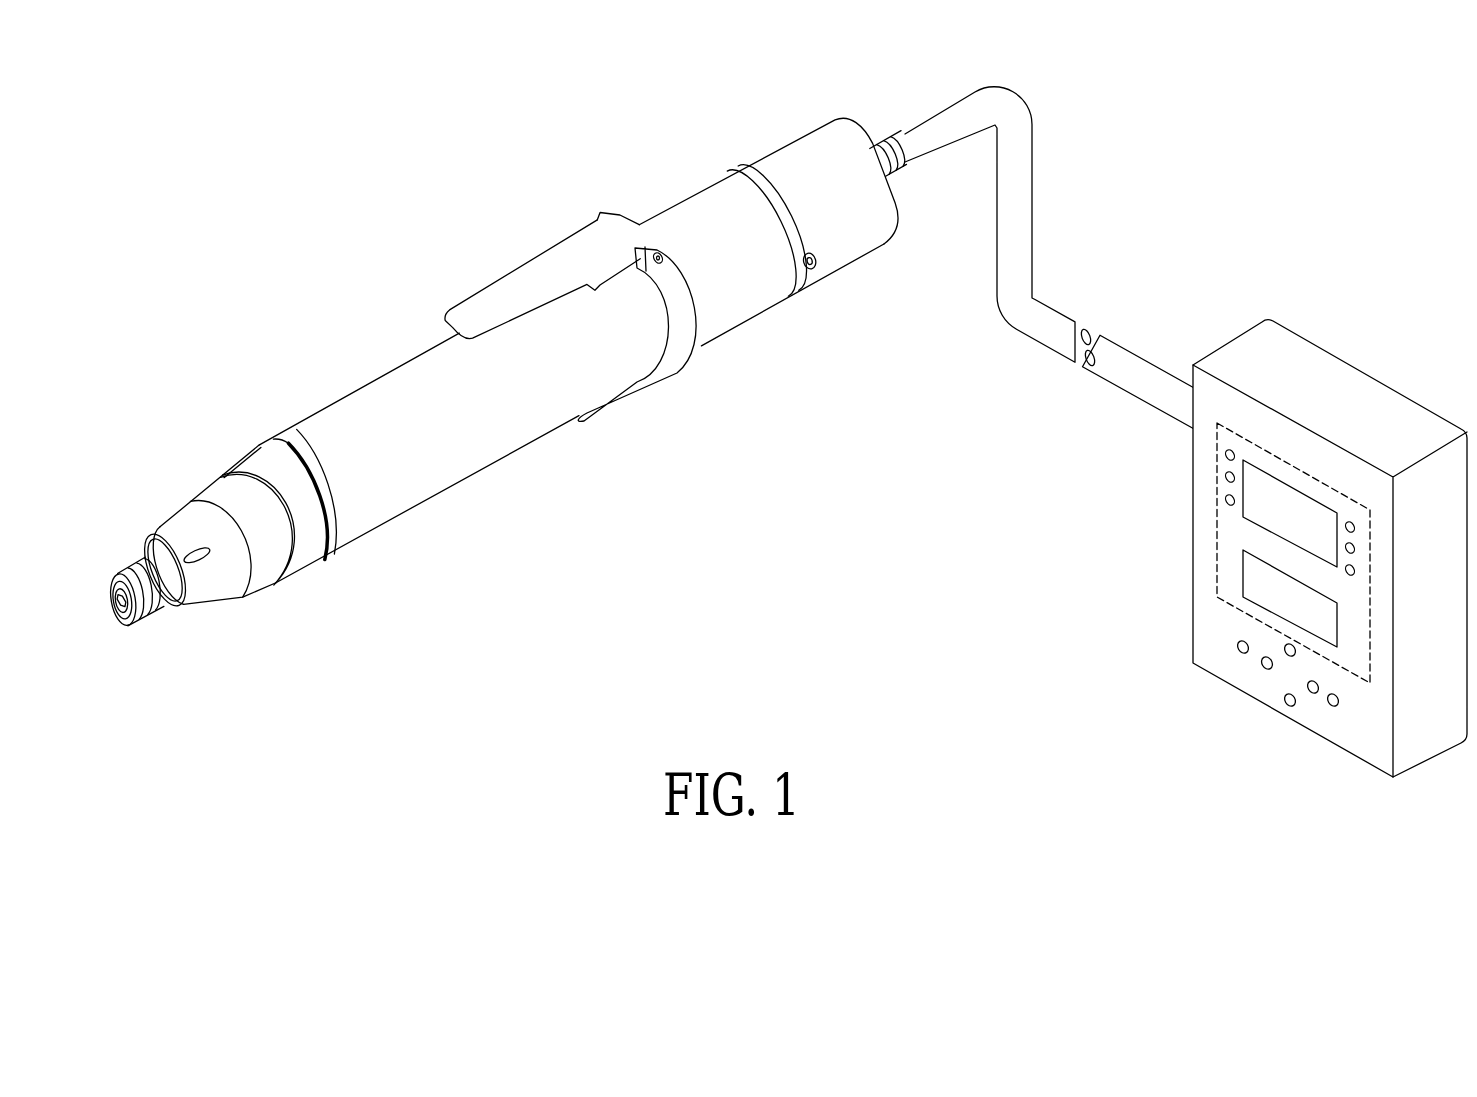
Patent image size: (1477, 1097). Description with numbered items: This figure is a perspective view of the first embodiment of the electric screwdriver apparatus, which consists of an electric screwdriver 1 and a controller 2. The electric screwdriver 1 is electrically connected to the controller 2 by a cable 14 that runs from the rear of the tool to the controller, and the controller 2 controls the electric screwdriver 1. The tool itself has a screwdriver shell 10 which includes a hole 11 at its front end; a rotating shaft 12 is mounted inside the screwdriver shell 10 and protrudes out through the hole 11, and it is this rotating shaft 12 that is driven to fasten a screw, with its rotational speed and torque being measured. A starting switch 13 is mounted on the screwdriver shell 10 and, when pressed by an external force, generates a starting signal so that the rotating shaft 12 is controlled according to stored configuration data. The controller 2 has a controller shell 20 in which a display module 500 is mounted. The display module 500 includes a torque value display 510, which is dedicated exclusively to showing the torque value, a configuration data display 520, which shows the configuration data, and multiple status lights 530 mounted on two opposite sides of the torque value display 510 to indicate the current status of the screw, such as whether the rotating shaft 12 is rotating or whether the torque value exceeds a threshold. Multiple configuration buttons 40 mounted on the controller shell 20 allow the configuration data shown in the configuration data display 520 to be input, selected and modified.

The electric screwdriver 1 is at (324, 308).
The screwdriver shell 10 is at (333, 418).
The hole 11 is at (152, 548).
The rotating shaft 12 is at (153, 592).
The starting switch 13 is at (528, 262).
The cable 14 is at (1027, 155).
The controller 2 is at (1330, 320).
The controller shell 20 is at (1345, 460).
The display module 500 is at (1371, 570).
The torque value display 510 is at (1338, 565).
The configuration data display 520 is at (1250, 603).
The status lights 530 is at (1358, 525).
The configuration buttons 40 is at (1331, 706).